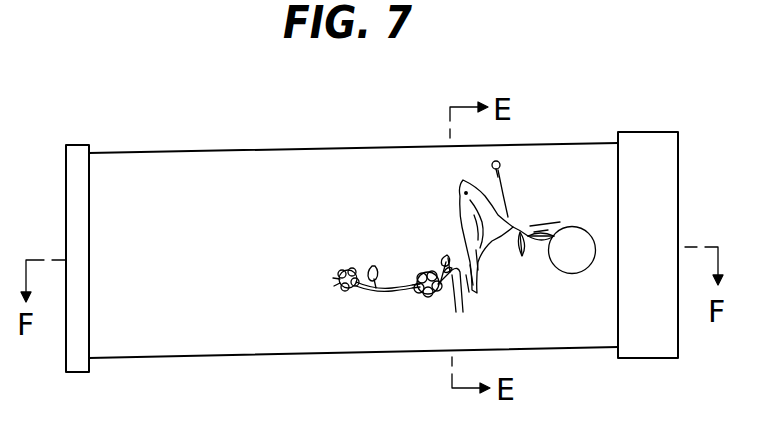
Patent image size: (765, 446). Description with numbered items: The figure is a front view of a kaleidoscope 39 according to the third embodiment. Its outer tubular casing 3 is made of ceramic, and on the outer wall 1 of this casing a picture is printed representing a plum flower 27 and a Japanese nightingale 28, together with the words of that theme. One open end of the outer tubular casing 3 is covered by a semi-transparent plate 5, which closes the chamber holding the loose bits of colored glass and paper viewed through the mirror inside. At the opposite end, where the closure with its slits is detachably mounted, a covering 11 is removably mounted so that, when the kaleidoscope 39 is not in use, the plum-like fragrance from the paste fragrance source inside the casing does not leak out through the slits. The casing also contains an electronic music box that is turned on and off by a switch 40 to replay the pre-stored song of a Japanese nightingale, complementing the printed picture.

The outer wall 1 is at (207, 152).
The outer tubular casing 3 is at (217, 323).
The semi-transparent plate 5 is at (78, 157).
The covering 11 is at (658, 157).
The plum flower 27 is at (345, 298).
The Japanese nightingale 28 is at (468, 233).
The kaleidoscope 39 is at (407, 244).
The switch 40 is at (572, 237).